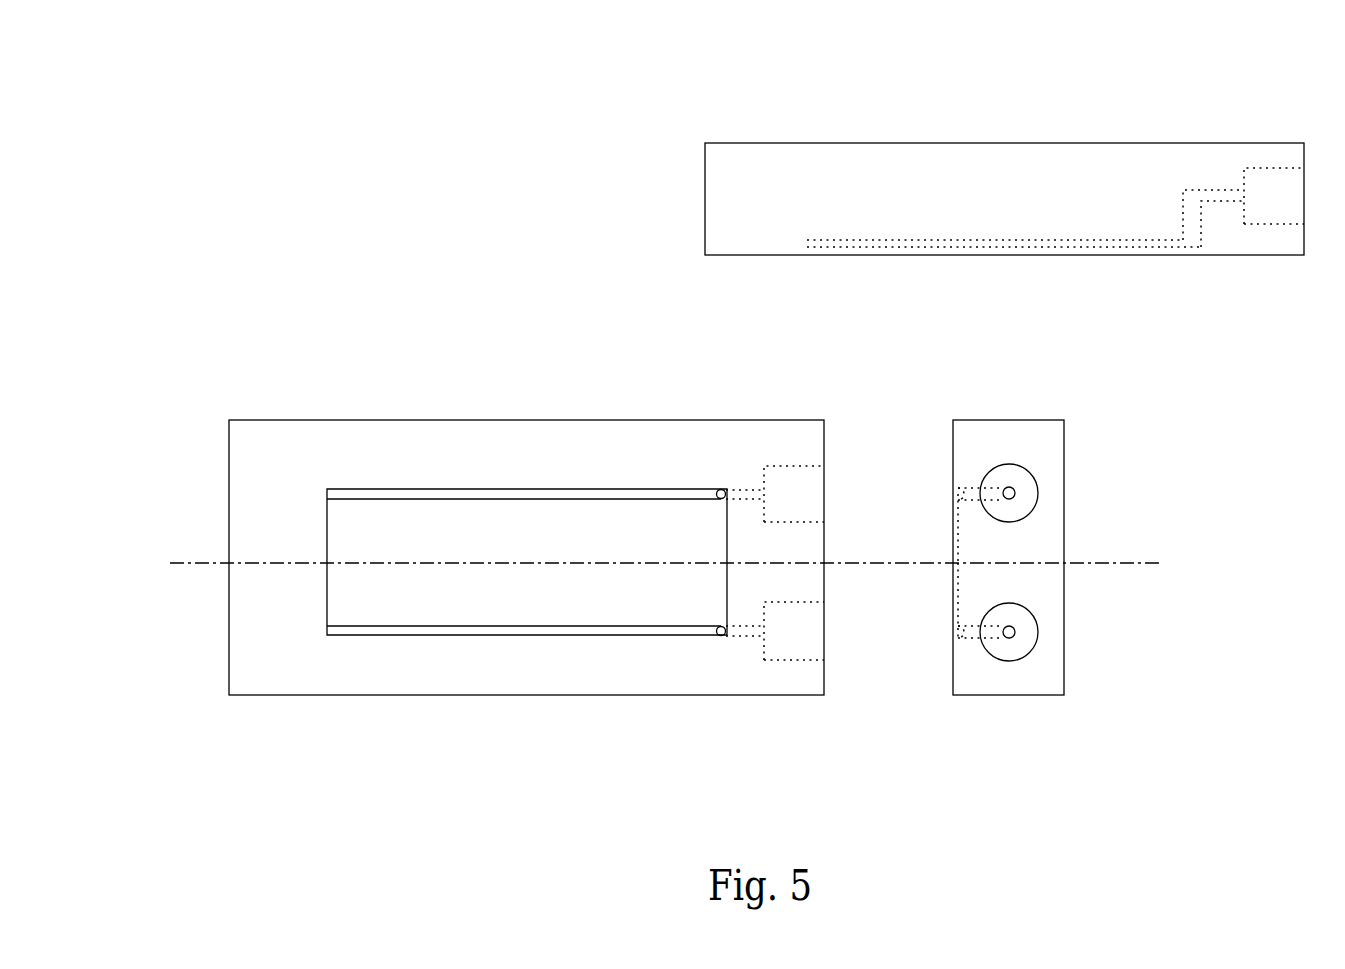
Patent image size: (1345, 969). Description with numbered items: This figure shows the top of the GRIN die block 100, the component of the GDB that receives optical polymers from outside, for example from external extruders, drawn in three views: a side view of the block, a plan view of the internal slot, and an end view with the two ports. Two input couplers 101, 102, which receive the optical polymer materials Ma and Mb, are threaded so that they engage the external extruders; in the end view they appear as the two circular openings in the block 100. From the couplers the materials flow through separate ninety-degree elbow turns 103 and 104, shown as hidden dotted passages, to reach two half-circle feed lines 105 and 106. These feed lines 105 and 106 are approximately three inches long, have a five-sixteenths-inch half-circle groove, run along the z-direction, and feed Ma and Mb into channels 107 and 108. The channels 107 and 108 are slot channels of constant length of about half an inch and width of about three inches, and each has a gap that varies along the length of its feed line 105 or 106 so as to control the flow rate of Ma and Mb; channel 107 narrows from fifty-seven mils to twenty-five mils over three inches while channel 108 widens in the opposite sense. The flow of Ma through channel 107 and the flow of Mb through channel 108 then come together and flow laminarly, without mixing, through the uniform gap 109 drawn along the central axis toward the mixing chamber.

The GRIN die block 100 is at (895, 143).
The input coupler 101 is at (1037, 483).
The input coupler 102 is at (1040, 617).
The 90-degree elbow turn 103 is at (747, 490).
The 90-degree elbow turn 104 is at (740, 627).
The half-circle feed line 105 is at (557, 492).
The half-circle feed line 106 is at (490, 630).
The slot channel 107 is at (455, 546).
The slot channel 108 is at (455, 590).
The uniform gap 109 is at (620, 563).